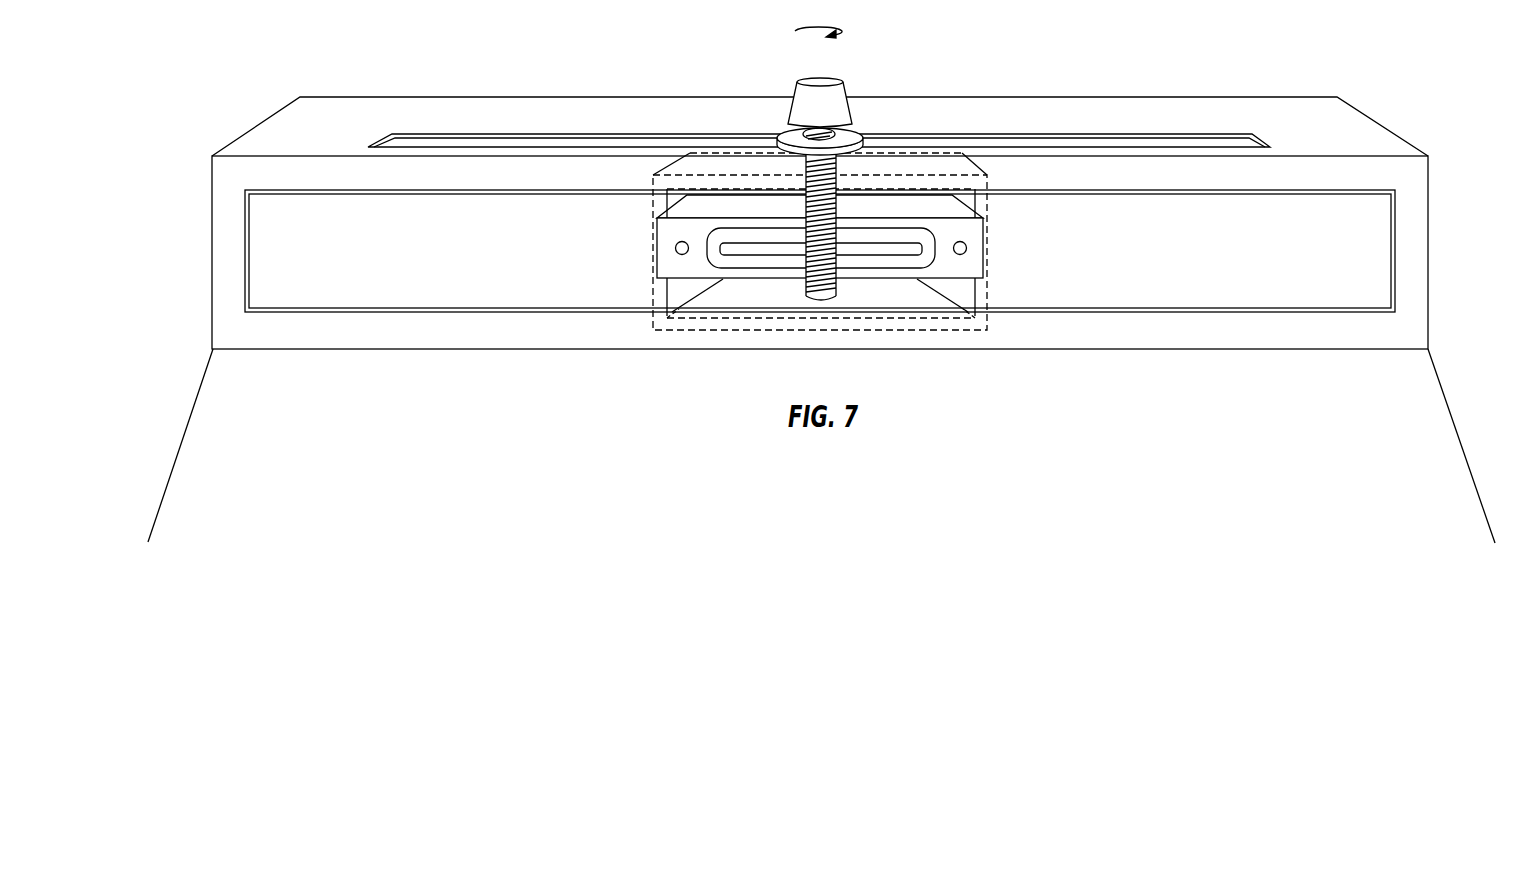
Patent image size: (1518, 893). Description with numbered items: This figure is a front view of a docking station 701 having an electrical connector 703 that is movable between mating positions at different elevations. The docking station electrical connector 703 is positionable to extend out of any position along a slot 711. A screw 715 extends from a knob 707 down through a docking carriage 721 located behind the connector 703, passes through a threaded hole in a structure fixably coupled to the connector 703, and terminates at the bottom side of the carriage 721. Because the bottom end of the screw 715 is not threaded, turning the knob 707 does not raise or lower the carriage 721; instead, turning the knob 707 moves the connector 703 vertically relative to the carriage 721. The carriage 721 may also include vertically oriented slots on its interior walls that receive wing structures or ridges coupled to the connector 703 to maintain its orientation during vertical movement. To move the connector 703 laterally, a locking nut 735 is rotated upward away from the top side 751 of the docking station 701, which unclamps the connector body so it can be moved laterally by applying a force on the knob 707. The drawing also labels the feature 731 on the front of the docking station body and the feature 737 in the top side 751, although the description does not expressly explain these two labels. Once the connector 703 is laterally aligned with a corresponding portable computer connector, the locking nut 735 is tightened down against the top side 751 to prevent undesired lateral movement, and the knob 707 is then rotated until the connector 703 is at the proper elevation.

The docking station 701 is at (568, 83).
The docking station electrical connector 703 is at (856, 253).
The knob 707 is at (843, 77).
The slot 711 is at (820, 251).
The screw 715 is at (764, 269).
The docking carriage 721 is at (782, 241).
The enclosure front face 731 is at (820, 270).
The locking nut 735 is at (856, 126).
The slot 737 is at (819, 122).
The top side 751 is at (1337, 141).